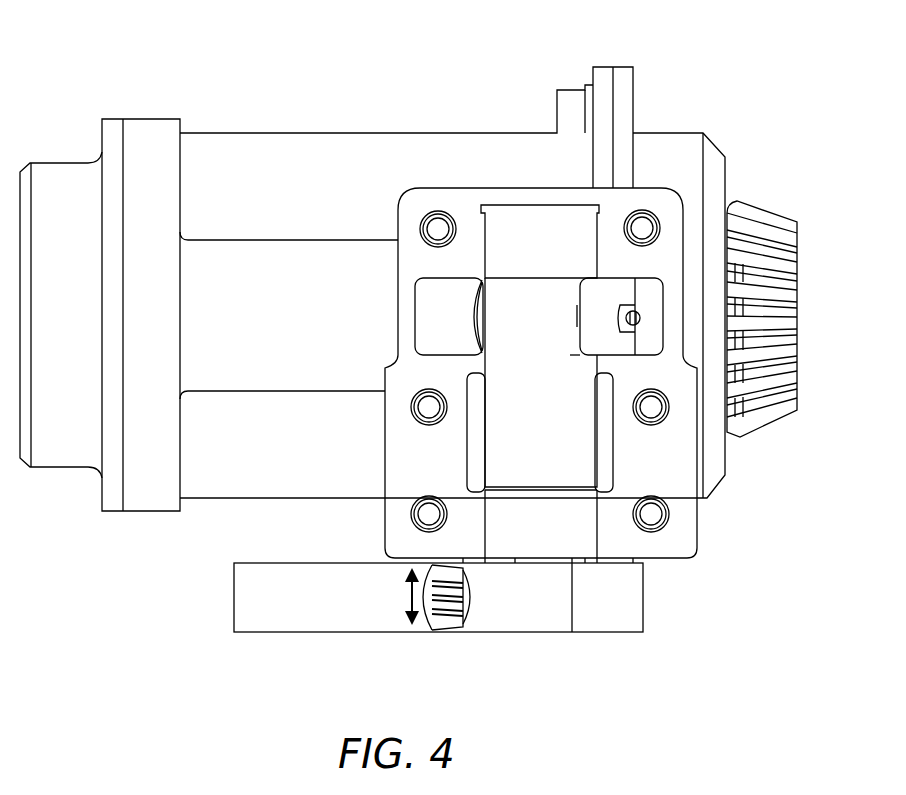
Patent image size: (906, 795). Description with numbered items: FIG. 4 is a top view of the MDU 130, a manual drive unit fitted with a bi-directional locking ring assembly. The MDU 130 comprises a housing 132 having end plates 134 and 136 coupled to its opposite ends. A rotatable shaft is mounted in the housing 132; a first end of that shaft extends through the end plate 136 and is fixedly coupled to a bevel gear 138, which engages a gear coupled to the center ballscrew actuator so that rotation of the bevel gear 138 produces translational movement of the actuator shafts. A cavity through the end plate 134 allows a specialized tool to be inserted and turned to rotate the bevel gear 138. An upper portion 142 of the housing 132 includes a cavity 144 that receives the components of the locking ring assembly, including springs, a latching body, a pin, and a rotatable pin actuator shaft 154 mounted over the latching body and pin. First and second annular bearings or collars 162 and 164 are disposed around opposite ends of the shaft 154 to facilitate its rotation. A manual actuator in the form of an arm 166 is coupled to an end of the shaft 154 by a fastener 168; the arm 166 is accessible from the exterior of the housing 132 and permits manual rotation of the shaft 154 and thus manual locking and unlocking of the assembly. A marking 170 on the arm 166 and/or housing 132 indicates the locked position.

The MDU 130 is at (738, 52).
The housing 132 is at (291, 141).
The end plate 134 is at (59, 176).
The end plate 136 is at (673, 143).
The bevel gear 138 is at (773, 221).
The upper portion 142 is at (683, 537).
The cavity 144 is at (423, 318).
The pin actuator shaft 154 is at (553, 386).
The first annular bearing or collar 162 is at (553, 532).
The second annular bearing or collar 164 is at (553, 256).
The manual actuator (arm) 166 is at (264, 621).
The fastener 168 is at (470, 616).
The marking indicating locked position 170 is at (240, 580).